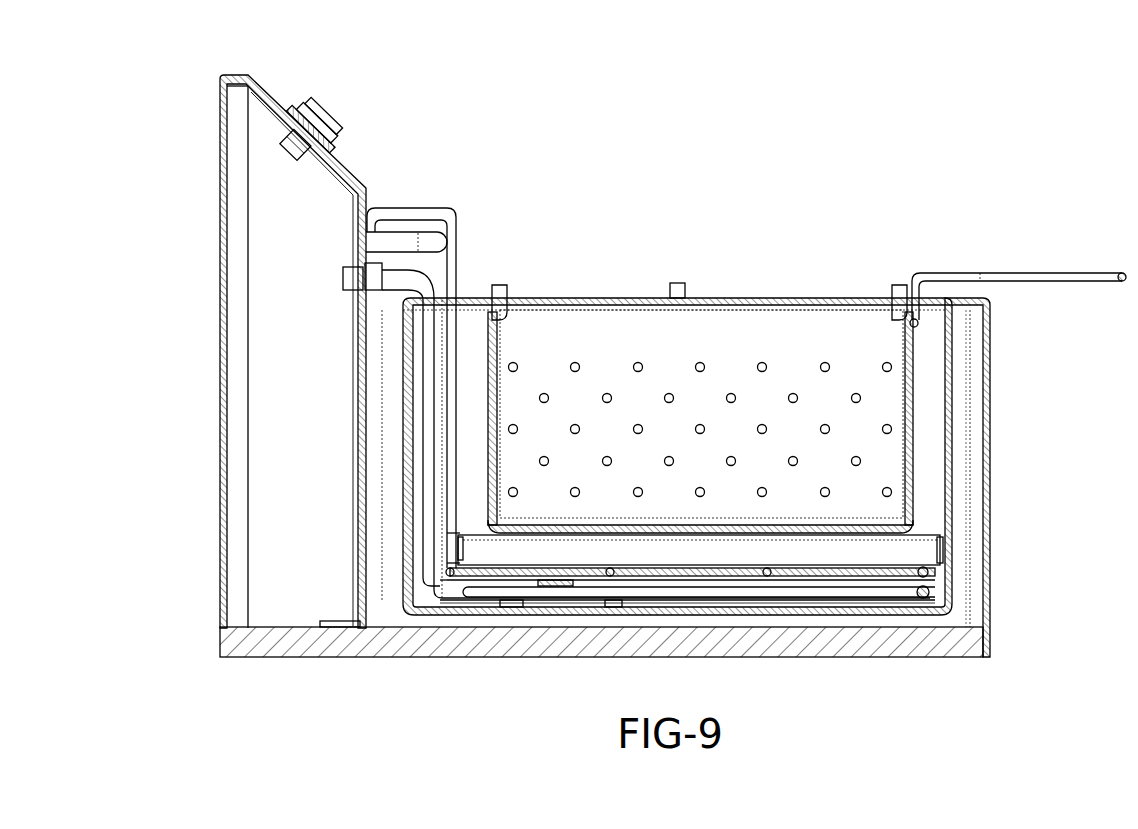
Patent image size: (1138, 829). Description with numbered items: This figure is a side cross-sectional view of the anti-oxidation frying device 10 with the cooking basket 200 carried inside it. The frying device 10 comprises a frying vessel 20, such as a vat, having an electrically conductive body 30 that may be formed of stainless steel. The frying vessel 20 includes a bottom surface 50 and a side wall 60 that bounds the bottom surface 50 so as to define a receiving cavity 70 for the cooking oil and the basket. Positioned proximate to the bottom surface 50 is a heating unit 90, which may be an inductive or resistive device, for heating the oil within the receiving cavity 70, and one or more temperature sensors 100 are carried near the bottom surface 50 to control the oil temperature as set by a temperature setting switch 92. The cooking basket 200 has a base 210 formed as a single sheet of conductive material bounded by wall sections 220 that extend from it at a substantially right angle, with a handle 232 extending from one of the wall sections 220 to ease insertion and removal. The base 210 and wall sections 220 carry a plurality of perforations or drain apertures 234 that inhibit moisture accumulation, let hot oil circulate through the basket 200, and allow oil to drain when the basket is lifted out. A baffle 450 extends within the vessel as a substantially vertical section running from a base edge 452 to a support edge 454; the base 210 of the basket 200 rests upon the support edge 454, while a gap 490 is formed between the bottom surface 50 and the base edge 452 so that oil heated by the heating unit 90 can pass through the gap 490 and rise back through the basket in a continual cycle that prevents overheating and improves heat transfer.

The anti-oxidation frying device 10 is at (975, 126).
The frying vessel 20 is at (990, 512).
The electrically conductive body 30 is at (956, 438).
The bottom surface 50 is at (800, 612).
The side wall 60 is at (956, 368).
The receiving cavity 70 is at (468, 333).
The heating unit 90 is at (855, 592).
The temperature setting switch 92 is at (324, 113).
The temperature sensor 100 is at (528, 600).
The cooking basket 200 is at (896, 342).
The base 210 is at (633, 515).
The wall section 220 is at (623, 328).
The handle 232 is at (1053, 278).
The perforations or drain apertures 234 is at (547, 395).
The baffle 450 is at (876, 549).
The base edge 452 is at (481, 563).
The support edge 454 is at (478, 521).
The gap 490 is at (686, 606).